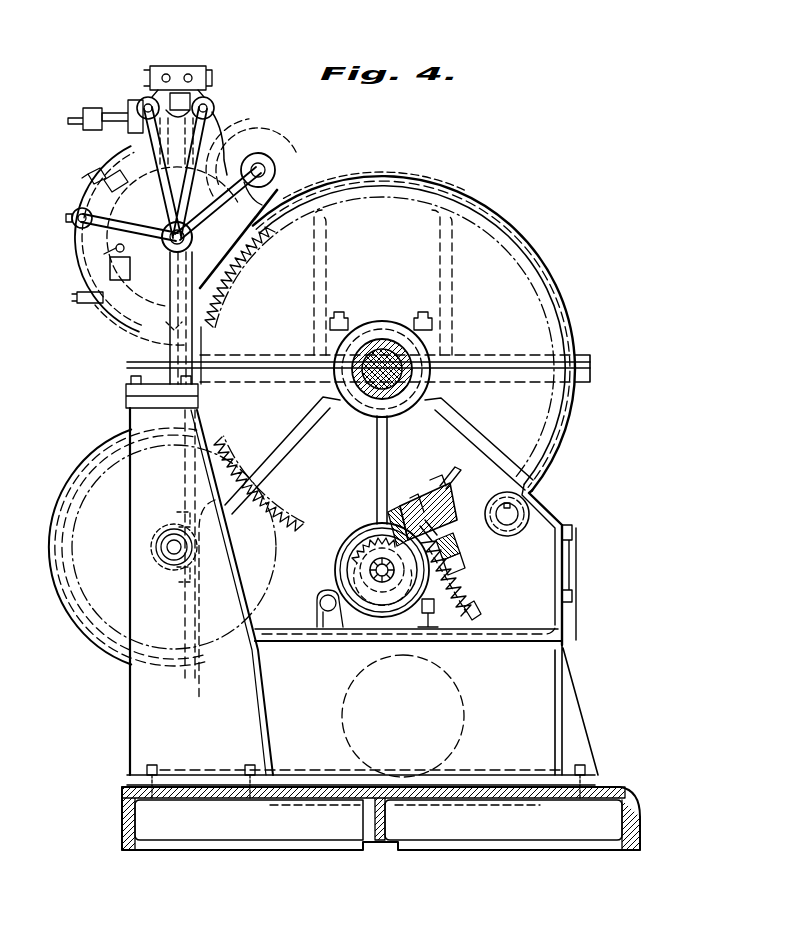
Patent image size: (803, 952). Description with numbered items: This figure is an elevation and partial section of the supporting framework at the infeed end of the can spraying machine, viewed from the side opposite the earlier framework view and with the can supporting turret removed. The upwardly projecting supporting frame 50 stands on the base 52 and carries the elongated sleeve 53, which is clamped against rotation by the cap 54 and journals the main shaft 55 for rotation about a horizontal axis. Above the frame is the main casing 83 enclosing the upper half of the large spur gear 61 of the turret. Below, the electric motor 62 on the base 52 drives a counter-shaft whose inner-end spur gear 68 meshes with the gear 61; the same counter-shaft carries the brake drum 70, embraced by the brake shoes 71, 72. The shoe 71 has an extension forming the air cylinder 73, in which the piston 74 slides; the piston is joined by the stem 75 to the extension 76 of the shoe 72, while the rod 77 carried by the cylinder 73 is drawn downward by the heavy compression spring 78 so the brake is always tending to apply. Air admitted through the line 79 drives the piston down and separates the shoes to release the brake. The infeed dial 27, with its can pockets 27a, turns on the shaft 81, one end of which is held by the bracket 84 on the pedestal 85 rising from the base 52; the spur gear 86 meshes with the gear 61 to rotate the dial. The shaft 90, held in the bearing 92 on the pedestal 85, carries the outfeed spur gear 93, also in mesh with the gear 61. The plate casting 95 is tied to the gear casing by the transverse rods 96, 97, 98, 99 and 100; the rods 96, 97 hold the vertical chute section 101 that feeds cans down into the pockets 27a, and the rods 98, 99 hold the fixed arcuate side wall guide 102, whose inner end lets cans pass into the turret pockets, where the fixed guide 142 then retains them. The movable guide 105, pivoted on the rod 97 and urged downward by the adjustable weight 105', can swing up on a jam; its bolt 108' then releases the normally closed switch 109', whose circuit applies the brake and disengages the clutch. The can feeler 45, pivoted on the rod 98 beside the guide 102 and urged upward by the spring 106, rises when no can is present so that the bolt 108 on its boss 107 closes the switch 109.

The infeed dial 27 is at (288, 188).
The pockets of the infeed dial 27a is at (375, 172).
The can feeler 45 is at (110, 318).
The supporting frame 50 is at (546, 512).
The base 52 is at (632, 800).
The sleeve 53 is at (380, 352).
The cap 54 is at (355, 318).
The main shaft 55 is at (395, 355).
The large spur gear 61 is at (232, 446).
The electric motor 62 is at (458, 740).
The spur gear 68 is at (336, 578).
The brake drum 70 is at (381, 546).
The brake shoe 71 is at (355, 545).
The brake shoe 72 is at (425, 585).
The air cylinder 73 is at (440, 500).
The piston 74 is at (405, 520).
The stem 75 is at (456, 546).
The extension 76 is at (458, 566).
The rod 77 is at (438, 524).
The compression spring 78 is at (470, 608).
The air line 79 is at (455, 472).
The shaft 81 is at (168, 232).
The main casing 83 is at (517, 302).
The bracket 84 is at (170, 398).
The pedestal 85 is at (158, 697).
The spur gear 86 is at (258, 232).
The shaft 90 is at (169, 540).
The bearing 92 is at (169, 555).
The spur gear 93 is at (286, 536).
The plate casting 95 is at (222, 128).
The transverse rod 96 is at (212, 102).
The transverse rod 97 is at (140, 102).
The transverse rod 98 is at (76, 210).
The transverse rod 99 is at (168, 345).
The transverse rod 100 is at (262, 162).
The chute section 101 is at (200, 90).
The side wall guide 102 is at (160, 355).
The movable guide 105 is at (112, 123).
The adjustable weight 105' is at (68, 102).
The spring 106 is at (95, 250).
The boss 107 is at (96, 318).
The bolt 108 is at (63, 305).
The bolt 108' is at (63, 173).
The switch 109 is at (77, 275).
The switch 109' is at (87, 165).
The fixed guide 142 is at (232, 160).